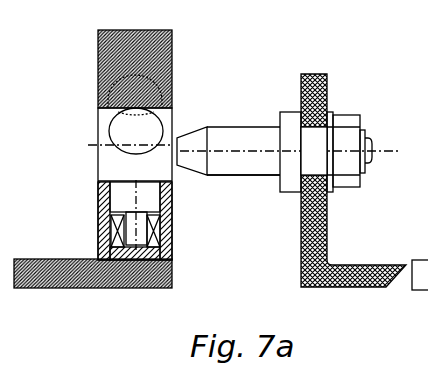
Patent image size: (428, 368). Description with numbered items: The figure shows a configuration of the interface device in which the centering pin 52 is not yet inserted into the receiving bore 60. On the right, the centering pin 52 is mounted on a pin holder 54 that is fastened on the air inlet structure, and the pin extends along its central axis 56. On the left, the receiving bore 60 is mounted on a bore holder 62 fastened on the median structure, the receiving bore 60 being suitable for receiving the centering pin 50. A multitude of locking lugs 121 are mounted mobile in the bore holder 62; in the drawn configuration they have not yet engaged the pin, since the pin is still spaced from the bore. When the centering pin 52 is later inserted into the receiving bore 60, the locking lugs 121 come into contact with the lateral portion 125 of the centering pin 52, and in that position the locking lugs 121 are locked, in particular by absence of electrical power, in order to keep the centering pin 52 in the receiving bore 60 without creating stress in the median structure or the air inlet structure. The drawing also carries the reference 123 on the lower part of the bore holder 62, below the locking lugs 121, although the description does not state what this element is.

The centering pin 50 is at (185, 62).
The centering pin 52 is at (227, 137).
The pin holder 54 is at (327, 84).
The central axis 56 is at (390, 149).
The receiving bore 60 is at (113, 157).
The bore holder 62 is at (118, 47).
The locking lugs 121 is at (120, 131).
The lower bore 123 is at (118, 170).
The lateral portion 125 is at (232, 178).